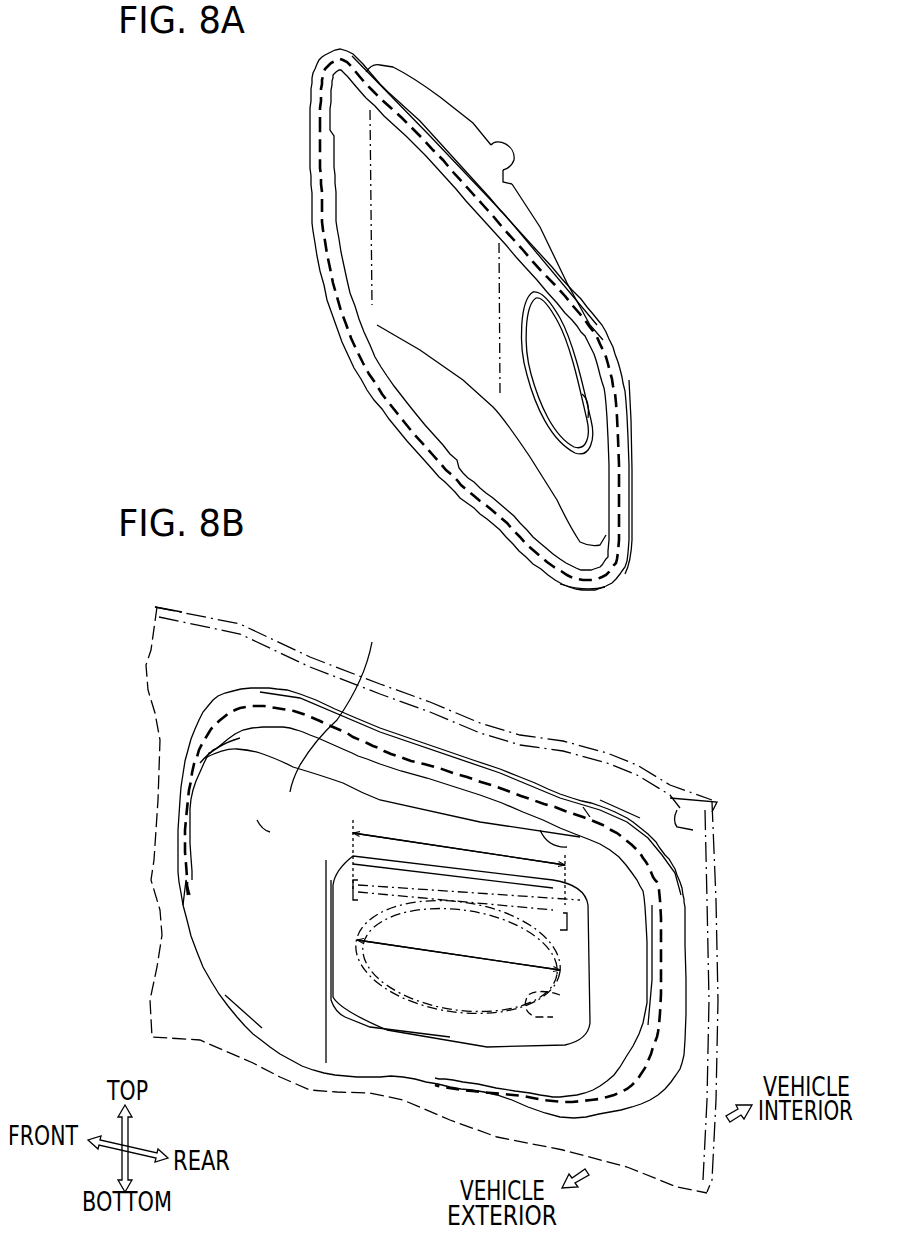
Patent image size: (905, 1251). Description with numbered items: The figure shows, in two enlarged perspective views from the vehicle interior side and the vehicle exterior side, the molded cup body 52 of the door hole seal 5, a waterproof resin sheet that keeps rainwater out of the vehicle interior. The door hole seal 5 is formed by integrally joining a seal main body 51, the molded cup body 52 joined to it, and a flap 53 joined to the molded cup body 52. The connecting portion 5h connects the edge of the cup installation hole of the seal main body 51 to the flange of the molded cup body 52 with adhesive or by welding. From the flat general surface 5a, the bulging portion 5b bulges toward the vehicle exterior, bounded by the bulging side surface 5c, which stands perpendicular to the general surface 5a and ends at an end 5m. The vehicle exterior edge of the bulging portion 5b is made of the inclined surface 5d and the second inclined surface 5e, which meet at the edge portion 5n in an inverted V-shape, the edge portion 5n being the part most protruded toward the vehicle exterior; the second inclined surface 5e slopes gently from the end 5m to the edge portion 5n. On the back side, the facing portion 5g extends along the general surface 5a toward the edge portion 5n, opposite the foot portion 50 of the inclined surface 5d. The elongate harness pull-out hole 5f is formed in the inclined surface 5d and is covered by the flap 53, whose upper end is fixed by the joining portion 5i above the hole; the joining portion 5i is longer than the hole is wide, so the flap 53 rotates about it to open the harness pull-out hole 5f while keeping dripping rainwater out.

In FIG. 8A, the door hole seal 5 is at (292, 157).
In FIG. 8B, the door hole seal 5 is at (228, 700).
In FIG. 8B, the general surface 5a is at (687, 790).
In FIG. 8A, the bulging portion 5b is at (470, 123).
In FIG. 8B, the bulging portion 5b is at (367, 823).
In FIG. 8A, the bulging side surface 5c is at (387, 67).
In FIG. 8B, the bulging side surface 5c is at (197, 735).
In FIG. 8A, the inclined surface 5d is at (533, 216).
In FIG. 8B, the inclined surface 5d is at (540, 830).
In FIG. 8A, the second inclined surface 5e is at (440, 100).
In FIG. 8B, the second inclined surface 5e is at (257, 820).
In FIG. 8A, the harness pull-out hole 5f is at (582, 394).
In FIG. 8B, the harness pull-out hole 5f is at (560, 995).
In FIG. 8A, the facing portion 5g is at (407, 243).
In FIG. 8B, the facing portion 5g is at (247, 963).
In FIG. 8A, the connecting portion 5h is at (597, 582).
In FIG. 8B, the connecting portion 5h is at (590, 796).
In FIG. 8B, the joining portion 5i is at (567, 930).
In FIG. 8A, the end of the bulging side surface 5m is at (397, 67).
In FIG. 8B, the end of the bulging side surface 5m is at (187, 850).
In FIG. 8A, the edge portion 5n is at (510, 180).
In FIG. 8B, the edge portion 5n is at (327, 1013).
In FIG. 8B, the foot portion 50 is at (632, 1005).
In FIG. 8B, the seal main body 51 is at (720, 873).
In FIG. 8A, the molded cup body 52 is at (623, 375).
In FIG. 8B, the molded cup body 52 is at (690, 934).
In FIG. 8A, the flap 53 is at (548, 347).
In FIG. 8B, the flap 53 is at (400, 1013).